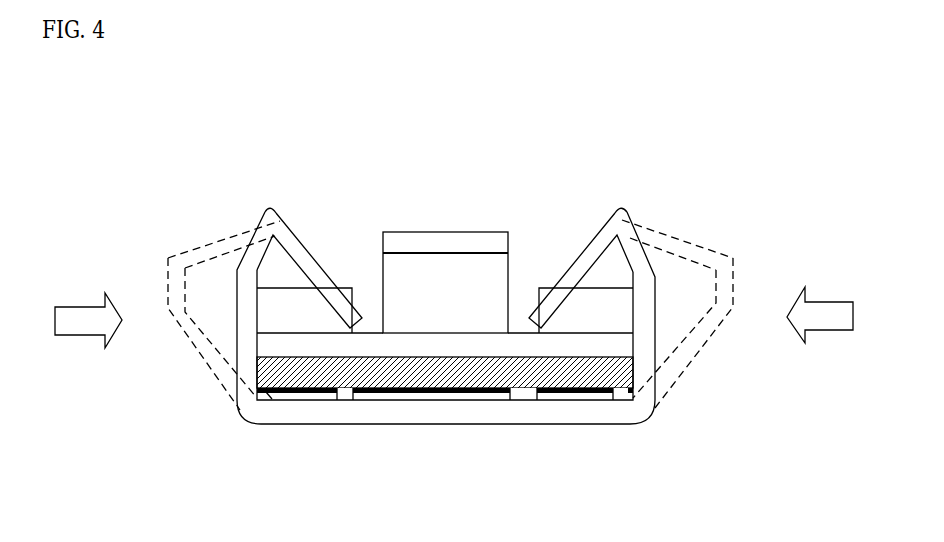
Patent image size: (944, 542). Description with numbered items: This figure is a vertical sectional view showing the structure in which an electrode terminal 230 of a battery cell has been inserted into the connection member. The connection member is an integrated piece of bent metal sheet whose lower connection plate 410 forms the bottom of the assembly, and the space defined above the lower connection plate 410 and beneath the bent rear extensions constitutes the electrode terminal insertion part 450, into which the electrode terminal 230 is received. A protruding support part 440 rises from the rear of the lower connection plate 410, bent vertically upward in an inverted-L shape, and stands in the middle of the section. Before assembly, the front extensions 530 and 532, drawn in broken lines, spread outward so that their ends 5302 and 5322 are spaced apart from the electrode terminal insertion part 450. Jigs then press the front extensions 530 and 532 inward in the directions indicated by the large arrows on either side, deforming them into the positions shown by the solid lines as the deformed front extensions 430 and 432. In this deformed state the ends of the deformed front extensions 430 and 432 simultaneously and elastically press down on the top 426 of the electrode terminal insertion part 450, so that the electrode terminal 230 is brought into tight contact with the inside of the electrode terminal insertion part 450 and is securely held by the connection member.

The electrode terminal 230 is at (300, 400).
The lower connection plate 410 is at (420, 413).
The top of the electrode terminal insertion part 426 is at (570, 340).
The deformed front extension 430 is at (581, 232).
The deformed front extension 432 is at (314, 234).
The protruding support part 440 is at (450, 246).
The electrode terminal insertion part 450 is at (494, 388).
The front extension 530 is at (731, 241).
The front extension 532 is at (162, 253).
The end of front extension 5302 is at (631, 226).
The end of front extension 5322 is at (266, 240).